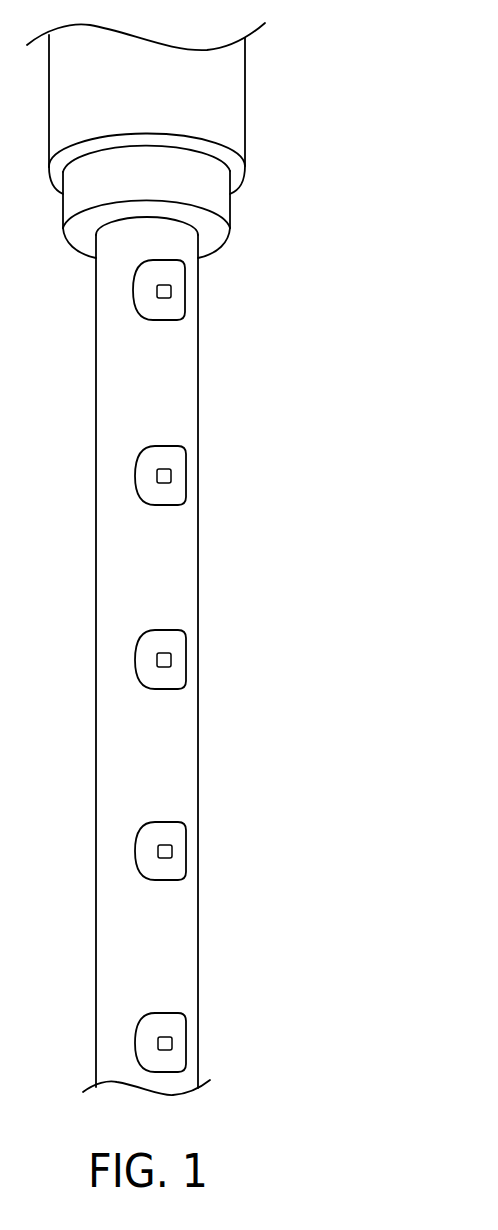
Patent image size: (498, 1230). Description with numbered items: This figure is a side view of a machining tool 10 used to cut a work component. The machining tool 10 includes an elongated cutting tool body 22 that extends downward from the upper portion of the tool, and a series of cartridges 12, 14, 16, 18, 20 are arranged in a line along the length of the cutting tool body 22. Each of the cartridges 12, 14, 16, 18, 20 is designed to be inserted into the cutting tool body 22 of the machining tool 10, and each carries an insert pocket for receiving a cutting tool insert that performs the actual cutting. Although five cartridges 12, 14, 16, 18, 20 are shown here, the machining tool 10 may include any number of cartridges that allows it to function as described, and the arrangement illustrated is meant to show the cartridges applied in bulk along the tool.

The machining tool 10 is at (338, 97).
The cartridge 12 is at (168, 277).
The cartridge 14 is at (173, 458).
The cartridge 16 is at (175, 642).
The cartridge 18 is at (180, 843).
The cartridge 20 is at (180, 1035).
The cutting tool body 22 is at (182, 399).